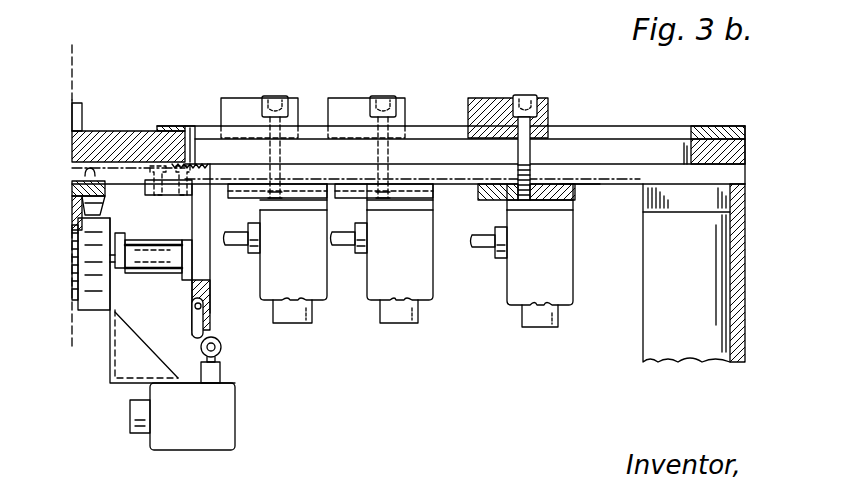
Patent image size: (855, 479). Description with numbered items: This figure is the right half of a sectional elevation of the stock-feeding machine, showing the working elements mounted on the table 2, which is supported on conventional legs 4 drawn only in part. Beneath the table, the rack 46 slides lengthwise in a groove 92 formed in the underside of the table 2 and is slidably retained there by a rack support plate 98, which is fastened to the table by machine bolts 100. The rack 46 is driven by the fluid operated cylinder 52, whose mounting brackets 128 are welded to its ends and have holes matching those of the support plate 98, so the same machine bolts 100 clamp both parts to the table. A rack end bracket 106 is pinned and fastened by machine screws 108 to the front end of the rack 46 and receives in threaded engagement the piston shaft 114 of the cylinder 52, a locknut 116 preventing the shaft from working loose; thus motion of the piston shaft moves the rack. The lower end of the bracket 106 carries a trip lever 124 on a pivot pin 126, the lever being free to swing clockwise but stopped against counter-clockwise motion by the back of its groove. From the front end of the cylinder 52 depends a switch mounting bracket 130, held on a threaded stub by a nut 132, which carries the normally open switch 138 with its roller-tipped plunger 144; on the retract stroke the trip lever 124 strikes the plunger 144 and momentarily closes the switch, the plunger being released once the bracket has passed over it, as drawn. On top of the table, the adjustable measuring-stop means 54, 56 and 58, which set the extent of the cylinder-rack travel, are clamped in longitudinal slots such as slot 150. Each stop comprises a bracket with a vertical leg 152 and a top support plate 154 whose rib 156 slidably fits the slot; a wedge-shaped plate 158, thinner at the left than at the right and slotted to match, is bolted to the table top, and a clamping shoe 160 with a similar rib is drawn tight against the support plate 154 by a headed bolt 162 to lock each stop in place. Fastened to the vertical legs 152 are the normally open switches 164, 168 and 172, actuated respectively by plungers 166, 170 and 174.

The table 2 is at (738, 152).
The legs 4 is at (740, 312).
The rack 46 is at (128, 168).
The fluid operated cylinder 52 is at (72, 268).
The adjustable measuring-stop means 54 is at (286, 89).
The adjustable measuring-stop means 56 is at (394, 87).
The adjustable measuring-stop means 58 is at (523, 87).
The groove 92 is at (735, 178).
The rack support plate 98 is at (72, 188).
The machine bolts 100 is at (85, 172).
The rack end bracket 106 is at (192, 232).
The machine screws 108 is at (160, 195).
The piston shaft 114 is at (139, 276).
The locknut 116 is at (185, 282).
The trip lever 124 is at (192, 333).
The pivot pin 126 is at (210, 316).
The mounting brackets 128 is at (74, 202).
The switch mounting bracket 130 is at (108, 370).
The nut 132 is at (122, 233).
The switch 138 is at (222, 407).
The plunger 144 is at (222, 355).
The longitudinal slot 150 is at (607, 133).
The vertical leg 152 is at (318, 206).
The top support plate 154 is at (258, 196).
The rib 156 is at (572, 181).
The wedge-shaped plate 158 is at (712, 130).
The clamping shoe 160 is at (240, 104).
The headed bolt 162 is at (282, 150).
The switch 164 is at (318, 295).
The switch plunger 166 is at (232, 246).
The switch 168 is at (425, 275).
The plunger 170 is at (342, 246).
The switch 172 is at (572, 268).
The plunger 174 is at (480, 247).